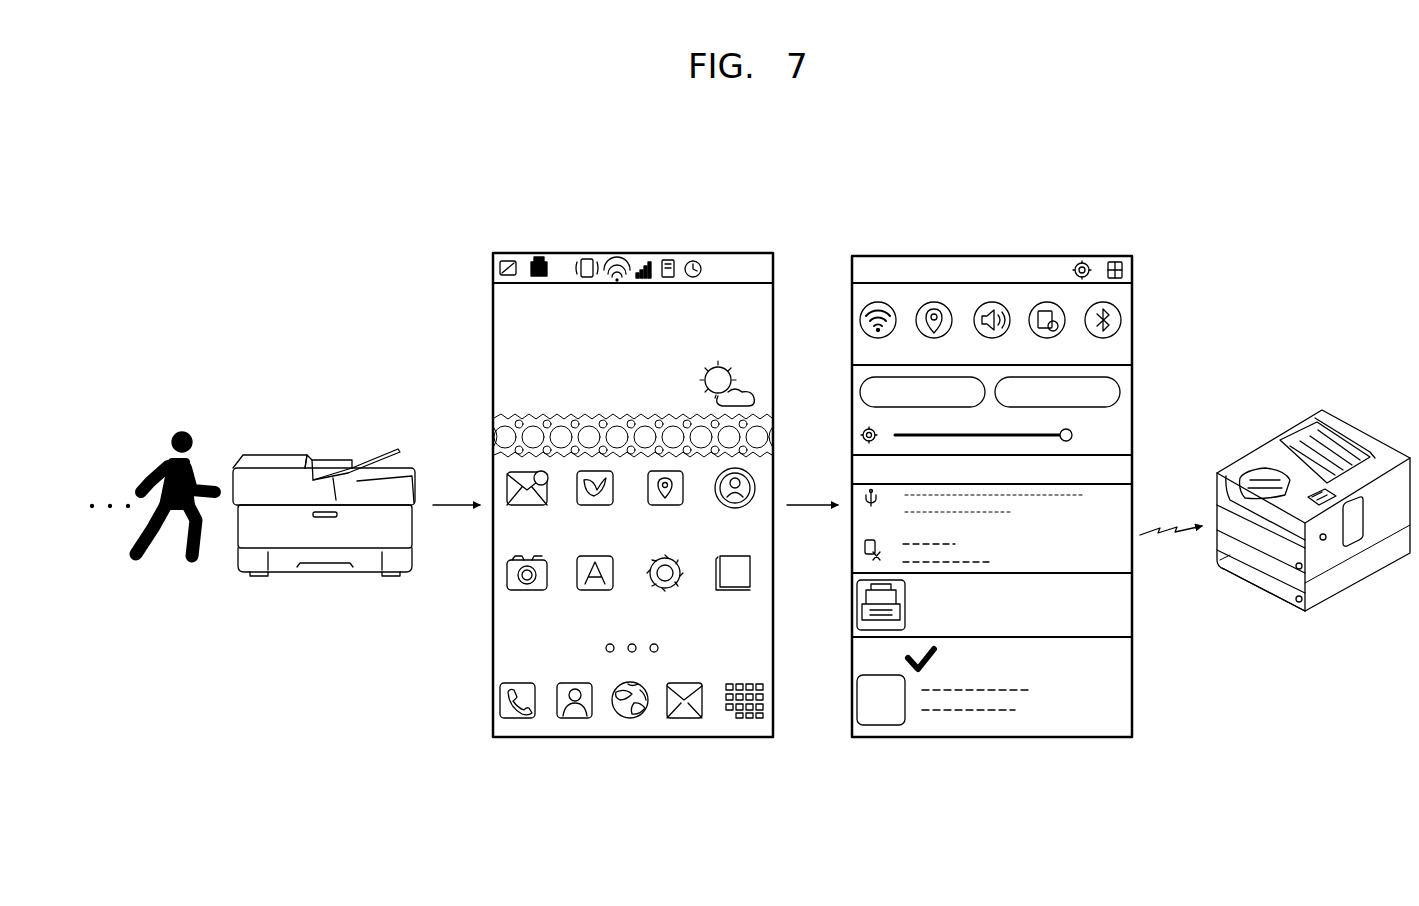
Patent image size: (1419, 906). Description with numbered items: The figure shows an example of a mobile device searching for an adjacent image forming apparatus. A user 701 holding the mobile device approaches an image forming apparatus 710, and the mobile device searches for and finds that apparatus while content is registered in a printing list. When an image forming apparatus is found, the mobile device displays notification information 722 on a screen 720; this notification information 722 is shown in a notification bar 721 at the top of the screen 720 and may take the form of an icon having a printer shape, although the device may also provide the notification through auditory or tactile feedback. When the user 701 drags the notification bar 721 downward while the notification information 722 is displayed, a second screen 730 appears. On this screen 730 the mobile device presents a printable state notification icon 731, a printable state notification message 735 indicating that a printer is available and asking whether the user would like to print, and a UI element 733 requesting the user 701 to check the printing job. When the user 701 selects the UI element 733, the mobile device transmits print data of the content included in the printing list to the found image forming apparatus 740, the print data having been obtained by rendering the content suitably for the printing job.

The user 701 is at (182, 430).
The image forming apparatus 710 is at (298, 452).
The screen 720 is at (666, 465).
The notification bar 721 is at (666, 238).
The notification information 722 is at (539, 256).
The screen 730 is at (991, 480).
The printable state notification icon 731 is at (855, 604).
The UI element 733 is at (907, 661).
The printable state notification message 735 is at (1121, 605).
The image forming apparatus 740 is at (1291, 422).